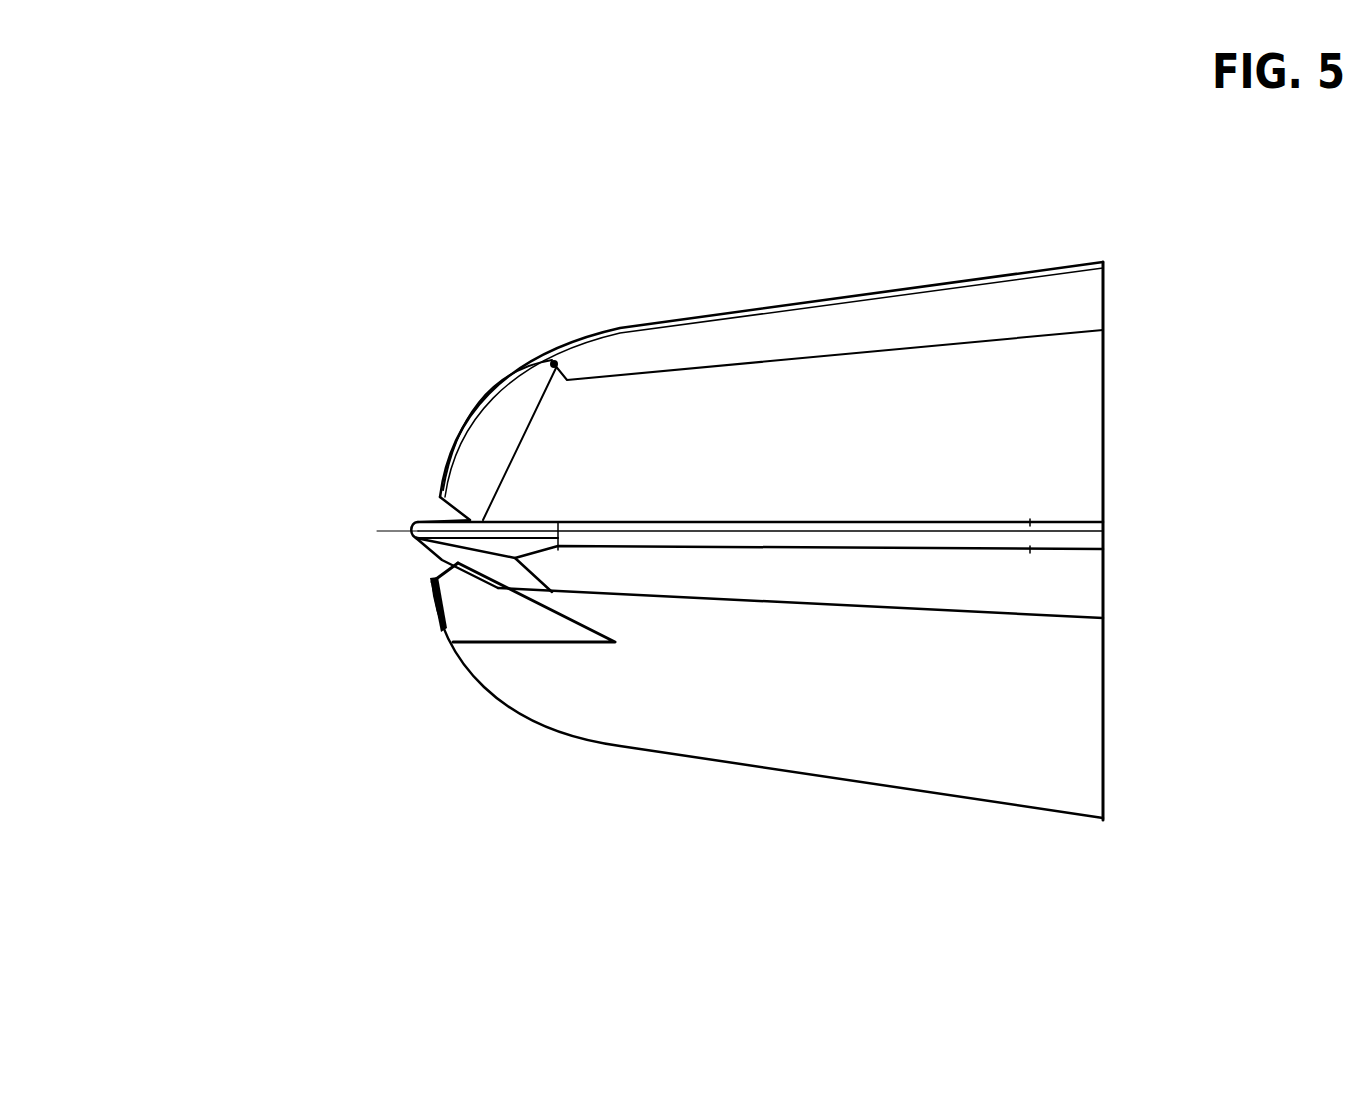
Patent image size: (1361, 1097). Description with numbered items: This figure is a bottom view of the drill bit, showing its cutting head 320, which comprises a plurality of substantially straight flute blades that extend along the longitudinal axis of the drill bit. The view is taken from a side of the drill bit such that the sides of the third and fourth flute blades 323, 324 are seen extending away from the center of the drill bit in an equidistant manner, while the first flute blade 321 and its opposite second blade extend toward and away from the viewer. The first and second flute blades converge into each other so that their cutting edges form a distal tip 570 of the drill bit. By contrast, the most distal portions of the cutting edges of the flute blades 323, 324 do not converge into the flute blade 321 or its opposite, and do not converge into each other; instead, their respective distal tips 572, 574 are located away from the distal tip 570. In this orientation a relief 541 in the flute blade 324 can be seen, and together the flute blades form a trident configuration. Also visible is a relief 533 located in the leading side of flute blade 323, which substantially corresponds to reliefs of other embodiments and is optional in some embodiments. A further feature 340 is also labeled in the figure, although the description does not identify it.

The cutting head 320 is at (424, 269).
The flute blade 321 is at (1060, 577).
The flute blade 323 is at (827, 705).
The flute blade 324 is at (1013, 390).
The blade member 340 is at (442, 560).
The relief 533 is at (472, 608).
The relief 541 is at (445, 512).
The distal tip 570 is at (416, 526).
The distal tip 572 is at (433, 582).
The distal tip 574 is at (441, 500).